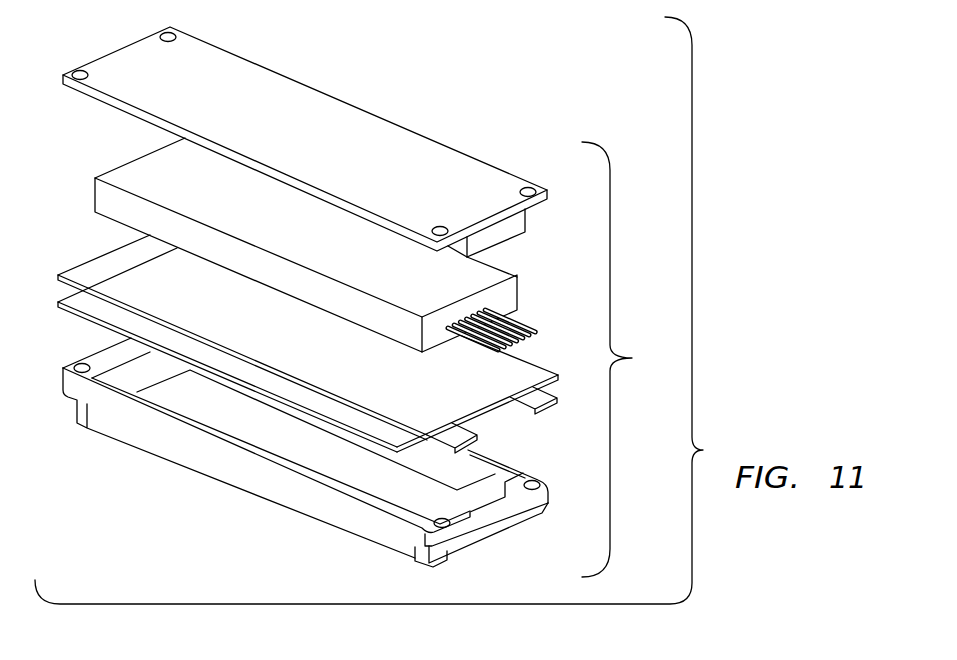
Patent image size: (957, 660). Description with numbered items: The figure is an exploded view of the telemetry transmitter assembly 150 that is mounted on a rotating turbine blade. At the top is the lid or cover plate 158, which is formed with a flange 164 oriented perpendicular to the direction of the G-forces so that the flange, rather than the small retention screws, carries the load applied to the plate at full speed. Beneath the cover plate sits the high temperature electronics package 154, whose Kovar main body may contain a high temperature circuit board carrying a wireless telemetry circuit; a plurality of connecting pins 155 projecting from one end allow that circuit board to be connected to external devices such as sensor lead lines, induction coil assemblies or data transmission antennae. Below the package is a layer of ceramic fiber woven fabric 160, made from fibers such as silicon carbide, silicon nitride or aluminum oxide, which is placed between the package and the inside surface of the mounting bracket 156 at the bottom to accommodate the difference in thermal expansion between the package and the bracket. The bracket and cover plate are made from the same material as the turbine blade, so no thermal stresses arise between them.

The telemetry transmitter assembly 150 is at (629, 359).
The high temperature electronics package 154 is at (148, 170).
The connecting pins 155 is at (507, 325).
The mounting bracket 156 is at (213, 458).
The cover plate 158 is at (320, 108).
The ceramic fiber woven fabric 160 is at (142, 288).
The flange 164 is at (497, 232).